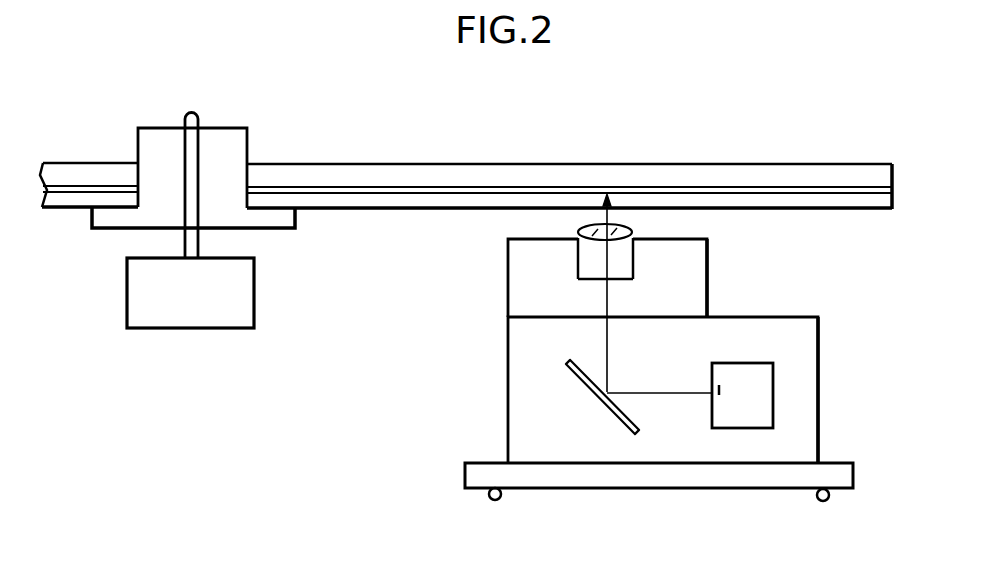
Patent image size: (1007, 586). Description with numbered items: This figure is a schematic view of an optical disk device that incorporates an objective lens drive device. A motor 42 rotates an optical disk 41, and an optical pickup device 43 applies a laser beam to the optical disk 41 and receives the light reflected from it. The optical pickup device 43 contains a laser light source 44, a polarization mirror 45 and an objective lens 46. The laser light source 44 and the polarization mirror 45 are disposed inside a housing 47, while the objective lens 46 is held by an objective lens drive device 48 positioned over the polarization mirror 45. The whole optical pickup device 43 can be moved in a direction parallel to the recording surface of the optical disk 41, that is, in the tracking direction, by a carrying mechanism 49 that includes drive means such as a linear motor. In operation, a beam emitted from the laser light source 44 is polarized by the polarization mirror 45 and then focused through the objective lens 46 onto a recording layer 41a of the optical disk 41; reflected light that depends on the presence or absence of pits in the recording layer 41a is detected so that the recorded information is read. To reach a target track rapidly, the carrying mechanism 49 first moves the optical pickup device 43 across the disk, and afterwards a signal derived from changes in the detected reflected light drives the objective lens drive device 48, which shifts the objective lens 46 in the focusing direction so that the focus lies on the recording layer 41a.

The optical disk 41 is at (398, 181).
The recording layer 41a is at (578, 190).
The motor 42 is at (235, 293).
The optical pickup device 43 is at (497, 375).
The laser light source 44 is at (750, 367).
The polarization mirror 45 is at (610, 413).
The objective lens 46 is at (590, 226).
The housing 47 is at (820, 372).
The objective lens drive device 48 is at (708, 290).
The carrying mechanism 49 is at (465, 472).